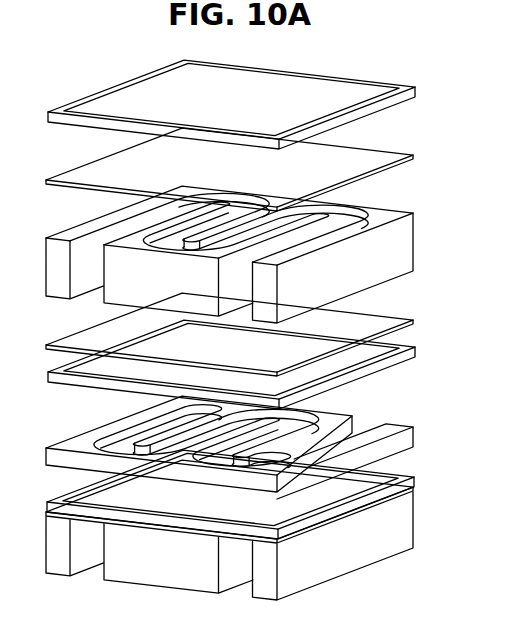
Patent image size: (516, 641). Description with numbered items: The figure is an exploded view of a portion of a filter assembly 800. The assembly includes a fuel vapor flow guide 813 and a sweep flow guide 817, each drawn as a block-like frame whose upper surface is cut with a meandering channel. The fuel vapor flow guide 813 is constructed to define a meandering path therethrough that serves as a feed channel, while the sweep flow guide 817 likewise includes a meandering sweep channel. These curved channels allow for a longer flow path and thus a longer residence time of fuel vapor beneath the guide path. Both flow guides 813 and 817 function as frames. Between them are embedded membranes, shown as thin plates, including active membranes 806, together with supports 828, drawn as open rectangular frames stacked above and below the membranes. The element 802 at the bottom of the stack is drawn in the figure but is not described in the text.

The filter assembly 800 is at (452, 90).
The support 828 is at (368, 93).
The active membrane 806 is at (386, 155).
The fuel vapor flow guide 813 is at (90, 290).
The sweep flow guide 817 is at (388, 425).
The base block 802 is at (365, 553).